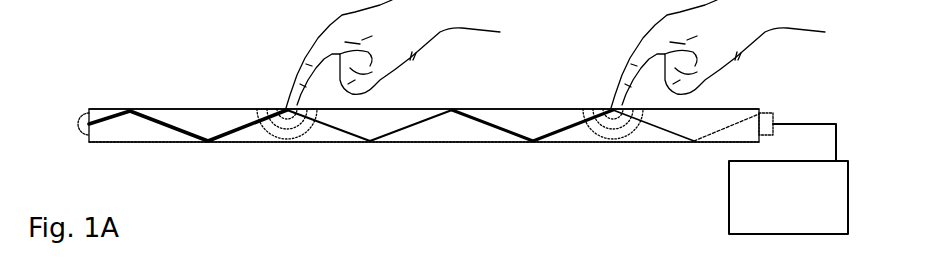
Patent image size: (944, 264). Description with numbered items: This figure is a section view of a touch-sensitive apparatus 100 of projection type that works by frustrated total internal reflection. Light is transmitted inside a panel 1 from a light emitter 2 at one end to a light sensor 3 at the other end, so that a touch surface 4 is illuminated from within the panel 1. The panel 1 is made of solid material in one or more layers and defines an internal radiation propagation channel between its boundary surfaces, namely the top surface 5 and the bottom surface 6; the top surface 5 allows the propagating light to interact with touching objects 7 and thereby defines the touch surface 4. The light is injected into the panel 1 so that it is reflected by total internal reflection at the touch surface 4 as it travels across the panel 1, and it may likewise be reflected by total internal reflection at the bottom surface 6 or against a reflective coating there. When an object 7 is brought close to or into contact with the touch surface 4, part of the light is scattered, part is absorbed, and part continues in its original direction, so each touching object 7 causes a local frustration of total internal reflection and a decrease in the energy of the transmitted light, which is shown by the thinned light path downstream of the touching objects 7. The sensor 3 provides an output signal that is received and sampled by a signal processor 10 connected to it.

The touch-sensitive apparatus 100 is at (133, 70).
The panel 1 is at (203, 118).
The light emitter 2 is at (88, 108).
The light sensor 3 is at (766, 110).
The touch surface 4 is at (501, 108).
The top surface 5 is at (262, 108).
The bottom surface 6 is at (252, 143).
The touching object 7 is at (318, 38).
The signal processor 10 is at (728, 207).